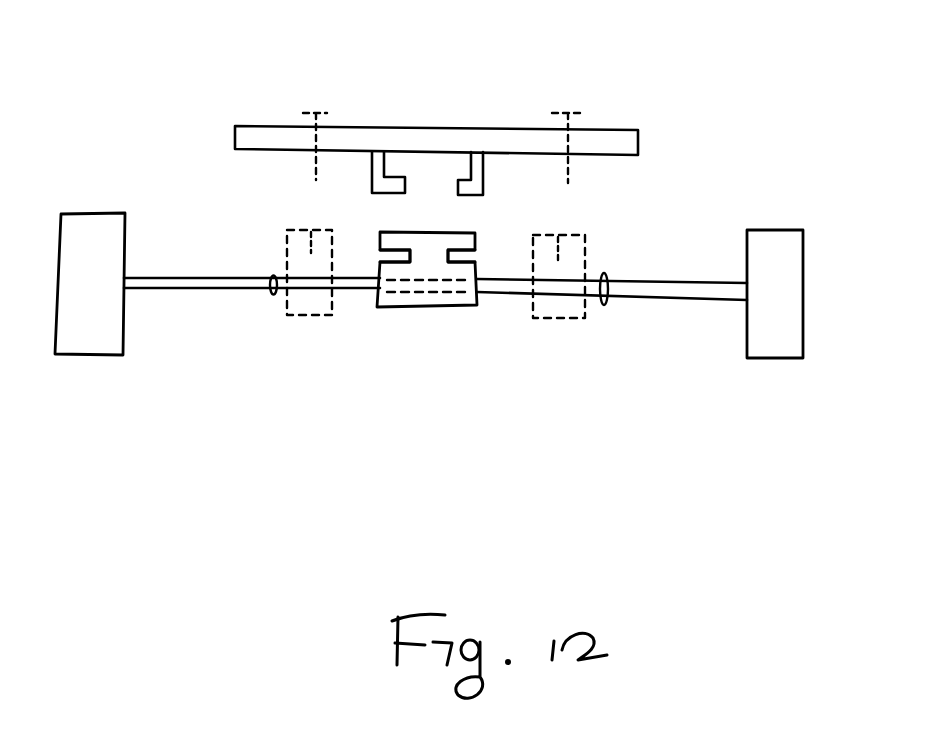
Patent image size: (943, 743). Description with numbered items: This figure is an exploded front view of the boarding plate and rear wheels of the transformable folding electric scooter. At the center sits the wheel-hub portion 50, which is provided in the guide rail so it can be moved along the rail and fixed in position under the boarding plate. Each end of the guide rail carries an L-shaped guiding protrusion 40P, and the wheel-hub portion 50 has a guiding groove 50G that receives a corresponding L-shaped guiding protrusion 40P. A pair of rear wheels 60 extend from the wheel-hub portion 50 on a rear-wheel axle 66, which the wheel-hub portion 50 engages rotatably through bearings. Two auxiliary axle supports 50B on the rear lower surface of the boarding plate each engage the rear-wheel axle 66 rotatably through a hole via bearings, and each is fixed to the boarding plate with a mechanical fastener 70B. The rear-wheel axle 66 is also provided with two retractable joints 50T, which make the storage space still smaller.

The L-shaped guiding protrusion 40P is at (393, 191).
The mechanical fastener 70B is at (330, 108).
The wheel-hub portion 50 is at (430, 304).
The guiding groove 50G is at (378, 257).
The auxiliary axle support 50B is at (300, 316).
The retractable joint 50T is at (273, 294).
The rear-wheel axle 66 is at (183, 289).
The rear wheel 60 is at (91, 344).